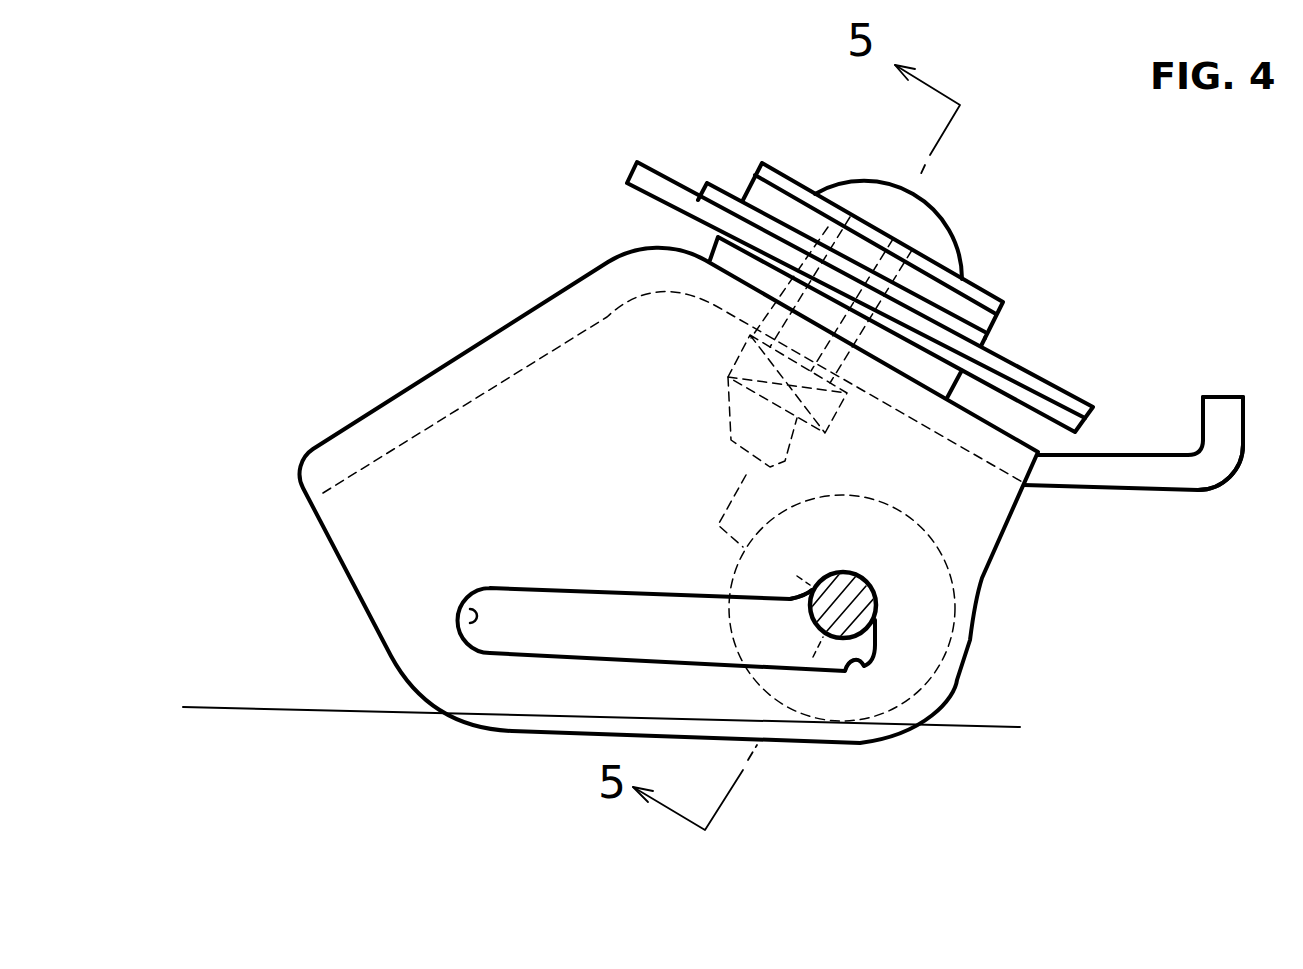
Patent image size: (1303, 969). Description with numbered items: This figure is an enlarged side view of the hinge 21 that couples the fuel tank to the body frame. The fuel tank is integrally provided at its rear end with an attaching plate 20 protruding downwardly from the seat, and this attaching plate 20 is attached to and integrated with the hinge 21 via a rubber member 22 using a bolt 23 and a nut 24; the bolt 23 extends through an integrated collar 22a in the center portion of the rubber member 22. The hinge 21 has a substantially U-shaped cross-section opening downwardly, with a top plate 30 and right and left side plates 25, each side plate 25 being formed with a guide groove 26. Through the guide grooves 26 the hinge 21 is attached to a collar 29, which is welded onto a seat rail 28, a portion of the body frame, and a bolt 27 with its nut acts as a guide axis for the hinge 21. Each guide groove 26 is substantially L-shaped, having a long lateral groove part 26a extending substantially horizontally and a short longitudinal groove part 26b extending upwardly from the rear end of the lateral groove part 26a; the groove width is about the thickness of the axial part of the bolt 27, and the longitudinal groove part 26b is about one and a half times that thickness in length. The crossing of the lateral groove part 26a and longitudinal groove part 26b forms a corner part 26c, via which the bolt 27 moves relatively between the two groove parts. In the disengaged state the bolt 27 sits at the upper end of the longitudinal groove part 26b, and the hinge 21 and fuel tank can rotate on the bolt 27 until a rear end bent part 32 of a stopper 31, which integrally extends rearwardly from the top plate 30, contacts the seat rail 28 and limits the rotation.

The attaching plate 20 is at (646, 163).
The hinge 21 is at (480, 323).
The rubber member 22 is at (750, 192).
The collar 22a is at (763, 163).
The bolt 23 is at (933, 233).
The nut 24 is at (753, 356).
The side plate 25 is at (450, 427).
The guide groove 26 is at (560, 590).
The lateral groove part 26a is at (472, 614).
The longitudinal groove part 26b is at (878, 598).
The corner part 26c is at (850, 673).
The bolt 27 is at (878, 625).
The seat rail 28 is at (350, 707).
The collar 29 is at (937, 668).
The top plate 30 is at (993, 423).
The stopper 31 is at (1137, 470).
The rear end bent part 32 is at (1223, 405).